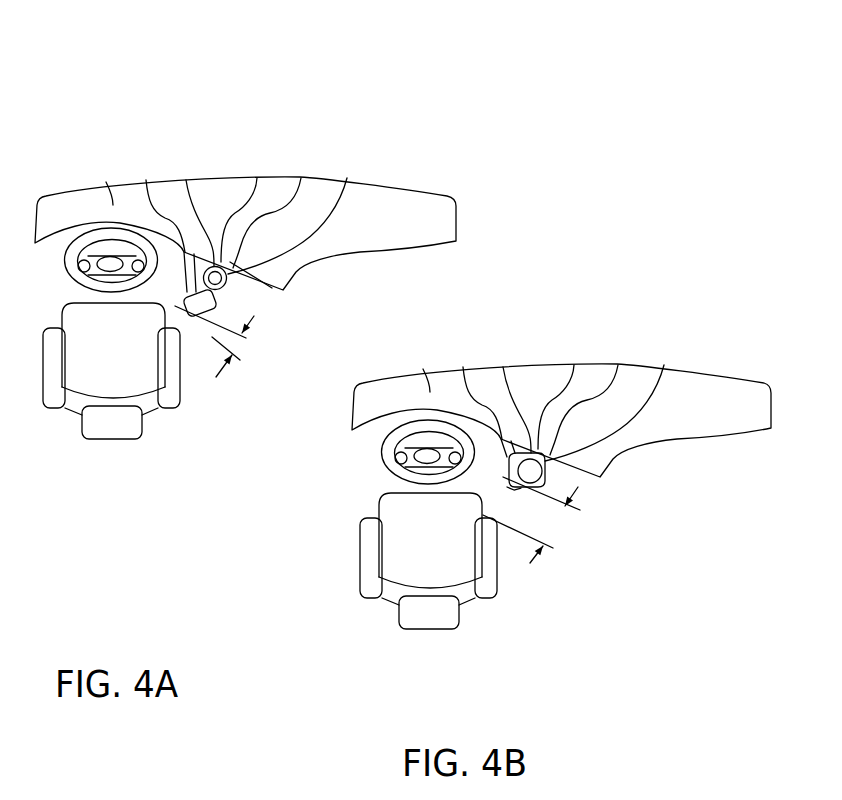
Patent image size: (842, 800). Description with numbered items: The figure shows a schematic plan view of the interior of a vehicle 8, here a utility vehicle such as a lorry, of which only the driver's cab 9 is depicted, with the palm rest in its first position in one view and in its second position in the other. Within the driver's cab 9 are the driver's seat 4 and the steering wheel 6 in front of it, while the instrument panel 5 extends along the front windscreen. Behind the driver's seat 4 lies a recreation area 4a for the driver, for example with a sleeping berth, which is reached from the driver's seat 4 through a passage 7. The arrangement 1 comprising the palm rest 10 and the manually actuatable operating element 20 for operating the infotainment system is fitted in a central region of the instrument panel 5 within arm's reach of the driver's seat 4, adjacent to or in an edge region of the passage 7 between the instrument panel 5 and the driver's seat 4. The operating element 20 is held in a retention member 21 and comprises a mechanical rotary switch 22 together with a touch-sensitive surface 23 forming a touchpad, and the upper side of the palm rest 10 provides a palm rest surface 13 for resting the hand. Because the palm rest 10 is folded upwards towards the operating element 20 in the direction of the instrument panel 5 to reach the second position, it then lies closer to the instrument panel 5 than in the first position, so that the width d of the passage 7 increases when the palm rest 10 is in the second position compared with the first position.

In FIG. 4A, the arrangement 1 is at (242, 297).
In FIG. 4B, the arrangement 1 is at (579, 477).
In FIG. 4A, the driver's seat 4 is at (100, 368).
In FIG. 4B, the driver's seat 4 is at (428, 600).
In FIG. 4A, the recreation area 4a is at (255, 456).
In FIG. 4B, the recreation area 4a is at (538, 663).
In FIG. 4A, the instrument panel 5 is at (106, 182).
In FIG. 4B, the instrument panel 5 is at (561, 386).
In FIG. 4A, the steering wheel 6 is at (65, 263).
In FIG. 4B, the steering wheel 6 is at (406, 452).
In FIG. 4A, the passage 7 is at (224, 330).
In FIG. 4B, the passage 7 is at (541, 560).
In FIG. 4A, the vehicle 8 is at (134, 54).
In FIG. 4B, the vehicle 8 is at (555, 466).
In FIG. 4A, the driver's cab 9 is at (430, 178).
In FIG. 4A, the palm rest 10 is at (146, 180).
In FIG. 4B, the palm rest 10 is at (472, 367).
In FIG. 4A, the palm rest surface 13 is at (198, 314).
In FIG. 4B, the palm rest surface 13 is at (509, 565).
In FIG. 4A, the operating element 20 is at (347, 178).
In FIG. 4B, the operating element 20 is at (621, 378).
In FIG. 4A, the retention member 21 is at (301, 178).
In FIG. 4B, the retention member 21 is at (595, 375).
In FIG. 4A, the rotary switch 22 is at (257, 178).
In FIG. 4B, the rotary switch 22 is at (563, 372).
In FIG. 4A, the touch-sensitive surface 23 is at (186, 180).
In FIG. 4B, the touch-sensitive surface 23 is at (510, 374).
In FIG. 4A, the width of the passage region d is at (247, 347).
In FIG. 4B, the width of the passage region d is at (551, 525).